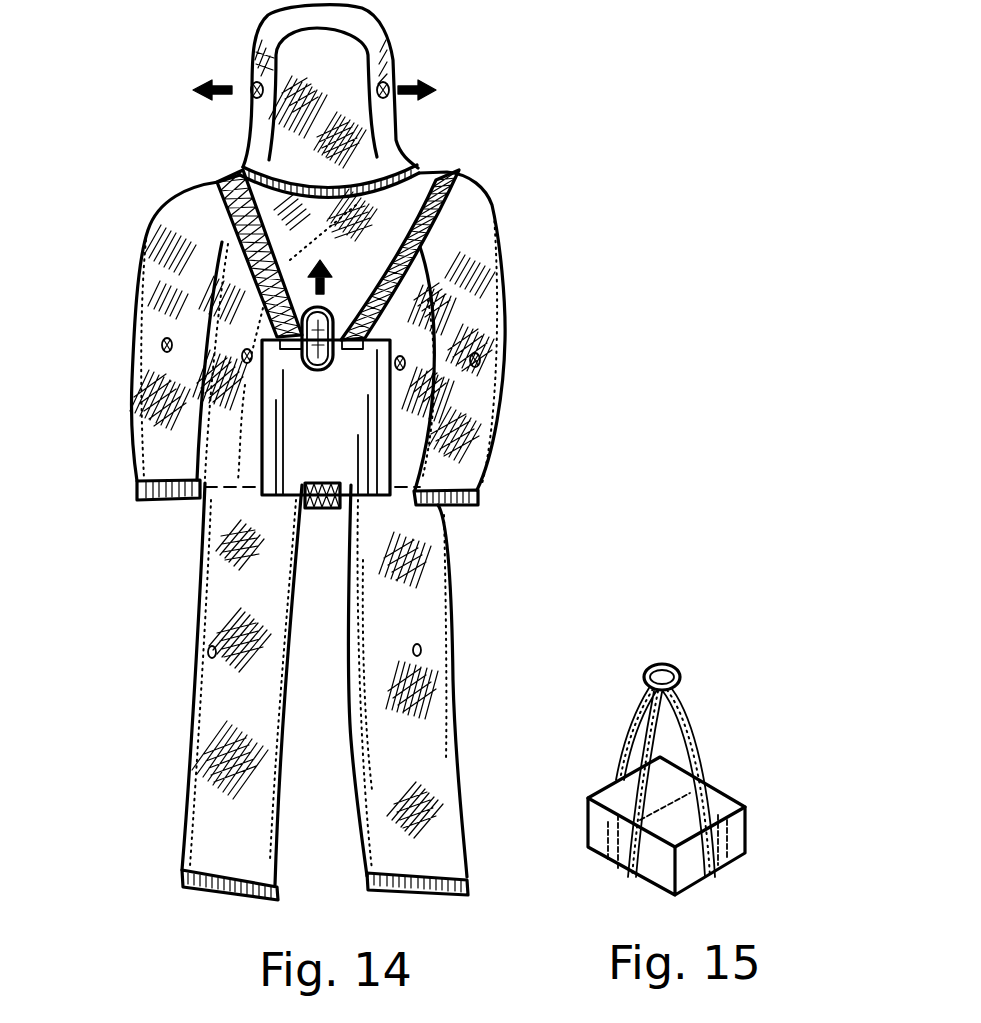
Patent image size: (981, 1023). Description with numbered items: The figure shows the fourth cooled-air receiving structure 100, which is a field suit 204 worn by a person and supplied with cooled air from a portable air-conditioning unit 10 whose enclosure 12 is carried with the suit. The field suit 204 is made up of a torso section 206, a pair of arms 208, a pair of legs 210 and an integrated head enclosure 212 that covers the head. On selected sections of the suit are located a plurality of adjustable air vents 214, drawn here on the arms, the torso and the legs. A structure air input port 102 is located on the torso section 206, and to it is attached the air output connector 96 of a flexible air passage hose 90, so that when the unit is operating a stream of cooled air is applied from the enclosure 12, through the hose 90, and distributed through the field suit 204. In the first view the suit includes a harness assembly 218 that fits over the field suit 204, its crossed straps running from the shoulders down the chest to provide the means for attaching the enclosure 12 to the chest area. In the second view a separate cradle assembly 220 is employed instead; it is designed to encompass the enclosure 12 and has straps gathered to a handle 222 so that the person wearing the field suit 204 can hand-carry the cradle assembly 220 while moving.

In FIG. 14, the cooled-air receiving structure 100 is at (347, 452).
In FIG. 14, the field suit 204 is at (347, 452).
In FIG. 14, the integrated head enclosure 212 is at (265, 45).
In FIG. 14, the harness assembly 218 is at (315, 338).
In FIG. 14, the structure air input port 102 is at (417, 237).
In FIG. 14, the air output connector 96 is at (441, 315).
In FIG. 14, the flexible air passage hose 90 is at (343, 336).
In FIG. 14, the adjustable air vents 214 is at (165, 346).
In FIG. 14, the arms 208 is at (177, 280).
In FIG. 14, the torso section 206 is at (240, 425).
In FIG. 14, the legs 210 is at (213, 747).
In FIG. 14, the portable air-conditioning unit 10 is at (439, 423).
In FIG. 15, the portable air-conditioning unit 10 is at (723, 826).
In FIG. 14, the enclosure 12 is at (337, 467).
In FIG. 15, the enclosure 12 is at (743, 818).
In FIG. 15, the handle 222 is at (677, 668).
In FIG. 15, the cradle assembly 220 is at (697, 747).